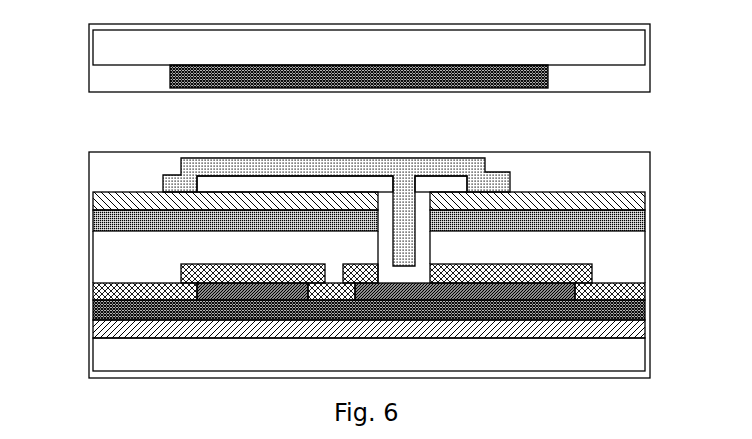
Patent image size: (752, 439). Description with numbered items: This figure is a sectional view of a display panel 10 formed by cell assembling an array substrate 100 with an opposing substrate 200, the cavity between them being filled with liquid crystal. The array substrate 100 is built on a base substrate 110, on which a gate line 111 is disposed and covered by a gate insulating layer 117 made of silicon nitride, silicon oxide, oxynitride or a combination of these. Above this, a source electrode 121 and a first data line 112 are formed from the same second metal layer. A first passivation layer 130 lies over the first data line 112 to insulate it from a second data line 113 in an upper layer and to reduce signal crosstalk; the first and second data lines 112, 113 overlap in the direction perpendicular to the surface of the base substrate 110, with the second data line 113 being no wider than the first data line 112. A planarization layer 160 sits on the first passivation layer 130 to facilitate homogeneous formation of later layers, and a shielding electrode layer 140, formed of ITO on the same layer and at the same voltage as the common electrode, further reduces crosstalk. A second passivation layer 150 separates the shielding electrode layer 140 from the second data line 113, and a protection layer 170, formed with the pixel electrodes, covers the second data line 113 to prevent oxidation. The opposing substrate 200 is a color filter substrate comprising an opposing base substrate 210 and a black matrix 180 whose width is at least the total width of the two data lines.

The display panel 10 is at (47, 20).
The array substrate 100 is at (650, 152).
The base substrate 110 is at (110, 352).
The gate line 111 is at (625, 327).
The first data line 112 is at (93, 292).
The second data line 113 is at (225, 184).
The gate insulating layer 117 is at (93, 314).
The source electrode 121 is at (592, 292).
The first passivation layer 130 is at (592, 270).
The shielding electrode layer 140 is at (575, 222).
The second passivation layer 150 is at (610, 200).
The planarization layer 160 is at (148, 257).
The protection layer 170 is at (510, 171).
The black matrix 180 is at (170, 73).
The opposing substrate 200 is at (650, 24).
The opposing base substrate 210 is at (625, 48).